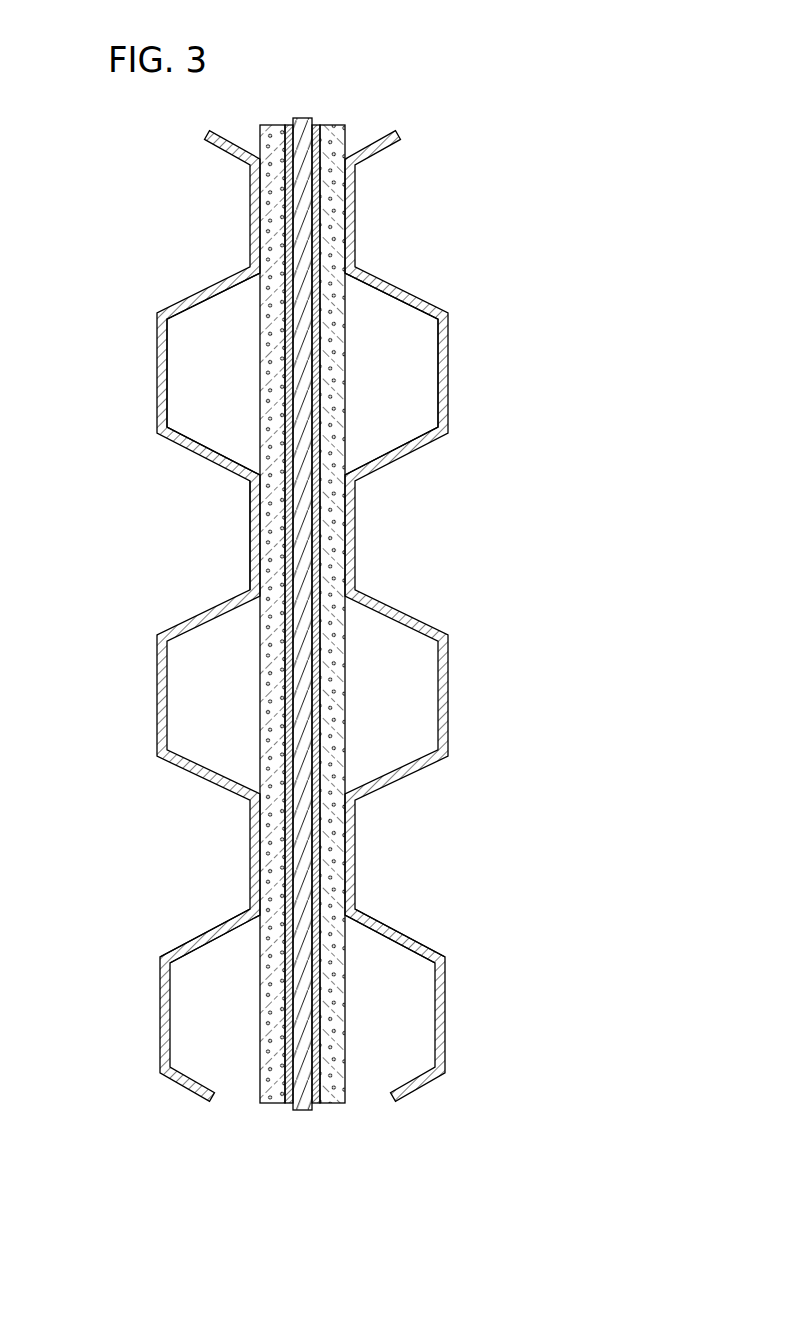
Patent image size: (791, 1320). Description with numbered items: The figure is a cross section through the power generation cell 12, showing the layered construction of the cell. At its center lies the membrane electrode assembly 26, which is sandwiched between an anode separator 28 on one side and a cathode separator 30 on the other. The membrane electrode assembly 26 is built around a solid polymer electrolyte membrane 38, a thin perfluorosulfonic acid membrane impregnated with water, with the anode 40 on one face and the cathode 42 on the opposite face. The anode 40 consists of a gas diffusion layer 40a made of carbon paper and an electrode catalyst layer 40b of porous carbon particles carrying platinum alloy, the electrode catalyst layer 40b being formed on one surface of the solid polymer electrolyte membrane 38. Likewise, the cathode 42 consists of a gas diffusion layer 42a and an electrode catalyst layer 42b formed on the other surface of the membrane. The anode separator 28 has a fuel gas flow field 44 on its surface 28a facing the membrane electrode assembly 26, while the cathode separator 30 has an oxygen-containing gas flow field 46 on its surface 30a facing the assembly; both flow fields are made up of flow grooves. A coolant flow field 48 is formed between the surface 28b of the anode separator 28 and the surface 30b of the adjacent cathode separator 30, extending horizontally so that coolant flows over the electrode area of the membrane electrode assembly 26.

The power generation cell 12 is at (454, 98).
The membrane electrode assembly 26 is at (303, 662).
The anode separator 28 is at (427, 1093).
The surface of the anode separator 28a is at (402, 947).
The surface of the anode separator 28b is at (423, 946).
The cathode separator 30 is at (183, 1094).
The surface of the cathode separator 30a is at (203, 947).
The surface of the cathode separator 30b is at (180, 946).
The solid polymer electrolyte membrane 38 is at (303, 1112).
The anode 40 is at (368, 646).
The gas diffusion layer 40a is at (330, 833).
The electrode catalyst layer 40b is at (318, 858).
The cathode 42 is at (237, 646).
The gas diffusion layer 42a is at (270, 833).
The electrode catalyst layer 42b is at (290, 858).
The fuel gas flow field 44 is at (391, 374).
The oxygen-containing gas flow field 46 is at (213, 374).
The coolant flow field 48 is at (198, 528).